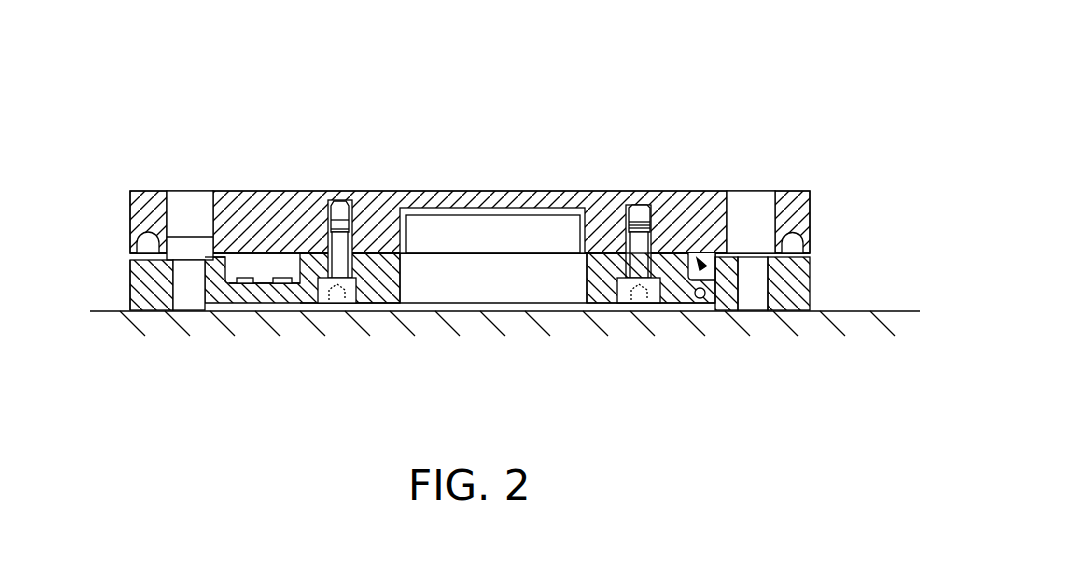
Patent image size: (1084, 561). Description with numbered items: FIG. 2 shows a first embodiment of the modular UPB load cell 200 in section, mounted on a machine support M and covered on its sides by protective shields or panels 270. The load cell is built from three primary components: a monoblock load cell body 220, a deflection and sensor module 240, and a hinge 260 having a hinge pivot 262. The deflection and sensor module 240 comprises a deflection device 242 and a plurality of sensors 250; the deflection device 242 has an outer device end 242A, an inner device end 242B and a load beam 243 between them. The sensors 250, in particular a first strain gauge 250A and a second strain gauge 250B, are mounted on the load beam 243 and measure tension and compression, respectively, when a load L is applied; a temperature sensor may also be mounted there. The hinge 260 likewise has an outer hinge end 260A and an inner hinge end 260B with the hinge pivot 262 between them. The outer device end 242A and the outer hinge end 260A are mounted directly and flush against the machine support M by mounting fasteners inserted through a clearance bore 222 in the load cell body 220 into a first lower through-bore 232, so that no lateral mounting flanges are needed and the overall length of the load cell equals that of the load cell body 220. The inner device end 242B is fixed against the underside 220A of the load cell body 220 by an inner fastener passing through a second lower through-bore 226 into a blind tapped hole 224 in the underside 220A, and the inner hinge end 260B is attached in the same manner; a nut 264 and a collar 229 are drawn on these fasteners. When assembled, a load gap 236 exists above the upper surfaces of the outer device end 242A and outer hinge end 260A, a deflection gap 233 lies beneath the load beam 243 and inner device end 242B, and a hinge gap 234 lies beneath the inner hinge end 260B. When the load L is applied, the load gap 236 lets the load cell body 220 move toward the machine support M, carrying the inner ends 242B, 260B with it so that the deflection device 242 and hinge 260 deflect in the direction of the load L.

The modular UPB load cell 200 is at (331, 84).
The monoblock load cell body 220 is at (390, 197).
The underside of the load cell body 220A is at (702, 266).
The clearance bore 222 is at (200, 194).
The blind tapped hole 224 is at (352, 200).
The second lower through-bore 226 is at (355, 306).
The fastener collar 229 is at (618, 235).
The first lower through-bore 232 is at (185, 312).
The deflection gap 233 is at (418, 306).
The hinge gap 234 is at (585, 312).
The load gap 236 is at (133, 254).
The deflection and sensor module 240 is at (157, 192).
The deflection device 242 is at (153, 312).
The outer device end 242A is at (130, 297).
The inner device end 242B is at (433, 312).
The load beam 243 is at (237, 312).
The sensors 250 is at (255, 262).
The first strain gauge 250A is at (248, 287).
The second strain gauge 250B is at (284, 286).
The hinge 260 is at (673, 312).
The outer hinge end 260A is at (800, 281).
The inner hinge end 260B is at (585, 282).
The hinge pivot 262 is at (703, 298).
The nut 264 is at (632, 306).
The protective shields or panels 270 is at (510, 285).
The load L is at (487, 186).
The machine support M is at (860, 323).